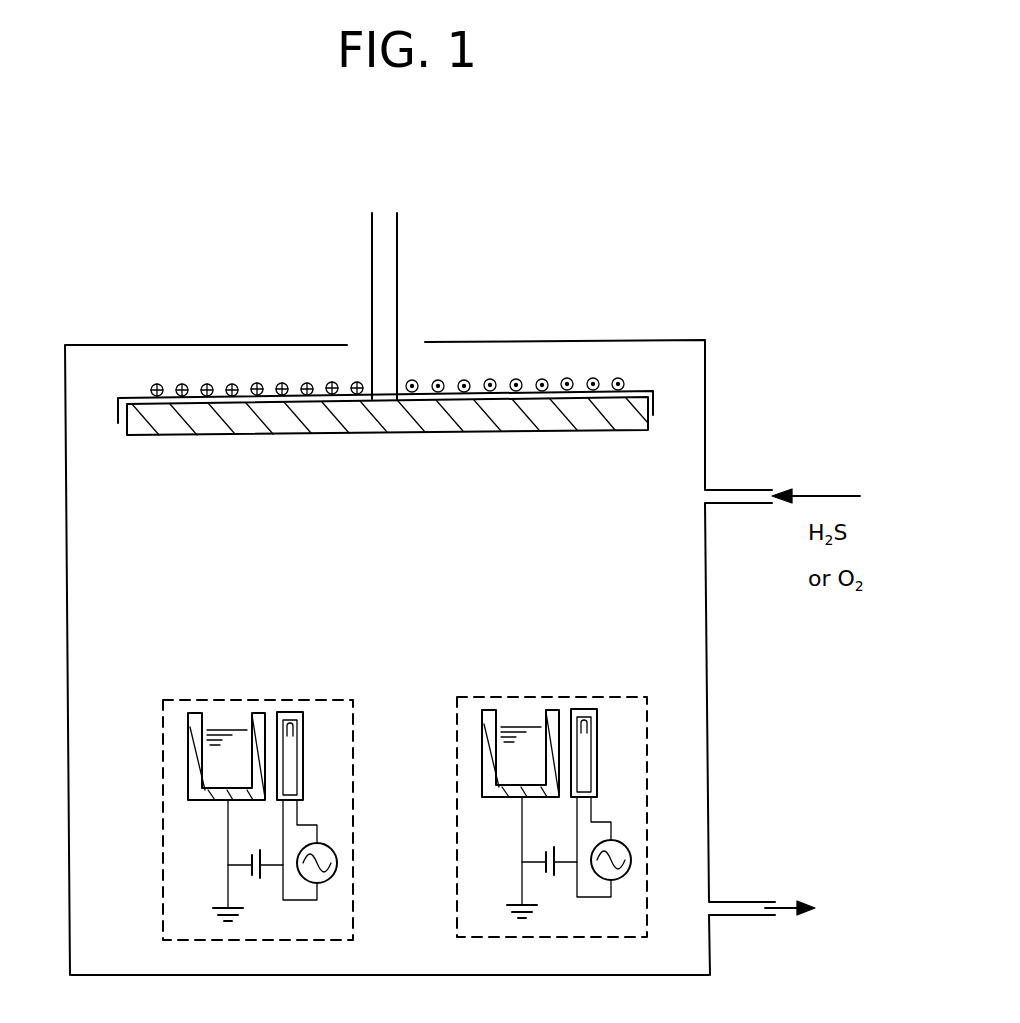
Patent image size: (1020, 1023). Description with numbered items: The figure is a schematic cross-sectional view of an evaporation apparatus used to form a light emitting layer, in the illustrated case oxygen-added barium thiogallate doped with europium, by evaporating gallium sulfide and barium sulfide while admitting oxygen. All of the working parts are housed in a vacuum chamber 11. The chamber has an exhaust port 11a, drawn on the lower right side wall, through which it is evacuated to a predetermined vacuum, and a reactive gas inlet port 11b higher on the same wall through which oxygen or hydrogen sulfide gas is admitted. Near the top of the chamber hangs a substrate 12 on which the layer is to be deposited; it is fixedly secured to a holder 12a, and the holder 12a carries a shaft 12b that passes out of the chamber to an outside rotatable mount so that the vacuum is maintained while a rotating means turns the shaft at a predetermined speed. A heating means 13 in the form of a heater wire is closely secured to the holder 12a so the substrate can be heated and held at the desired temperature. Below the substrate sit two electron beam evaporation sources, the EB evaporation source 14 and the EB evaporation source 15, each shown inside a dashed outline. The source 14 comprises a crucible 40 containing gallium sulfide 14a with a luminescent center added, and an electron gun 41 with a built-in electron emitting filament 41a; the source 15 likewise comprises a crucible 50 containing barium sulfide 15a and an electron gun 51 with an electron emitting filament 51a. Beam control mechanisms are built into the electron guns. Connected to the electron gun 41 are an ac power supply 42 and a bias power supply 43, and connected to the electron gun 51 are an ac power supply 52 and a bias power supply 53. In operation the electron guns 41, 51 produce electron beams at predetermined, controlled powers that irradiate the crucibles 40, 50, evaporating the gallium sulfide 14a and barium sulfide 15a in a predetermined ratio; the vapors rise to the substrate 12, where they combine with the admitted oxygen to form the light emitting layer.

The vacuum chamber 11 is at (605, 342).
The exhaust port 11a is at (735, 915).
The reactive gas inlet port 11b is at (735, 490).
The substrate 12 is at (417, 427).
The holder 12a is at (688, 397).
The shaft 12b is at (397, 275).
The heating means 13 is at (494, 380).
The EB evaporation source 14 is at (552, 780).
The gallium sulfide 14a is at (461, 739).
The EB evaporation source 15 is at (235, 700).
The barium sulfide 15a is at (198, 748).
The crucible 40 is at (469, 814).
The electron gun 41 is at (629, 791).
The electron emitting filament 41a is at (638, 754).
The ac power supply 42 is at (639, 860).
The bias power supply 43 is at (563, 912).
The crucible 50 is at (190, 797).
The electron gun 51 is at (300, 712).
The electron emitting filament 51a is at (300, 735).
The ac power supply 52 is at (337, 863).
The bias power supply 53 is at (262, 878).